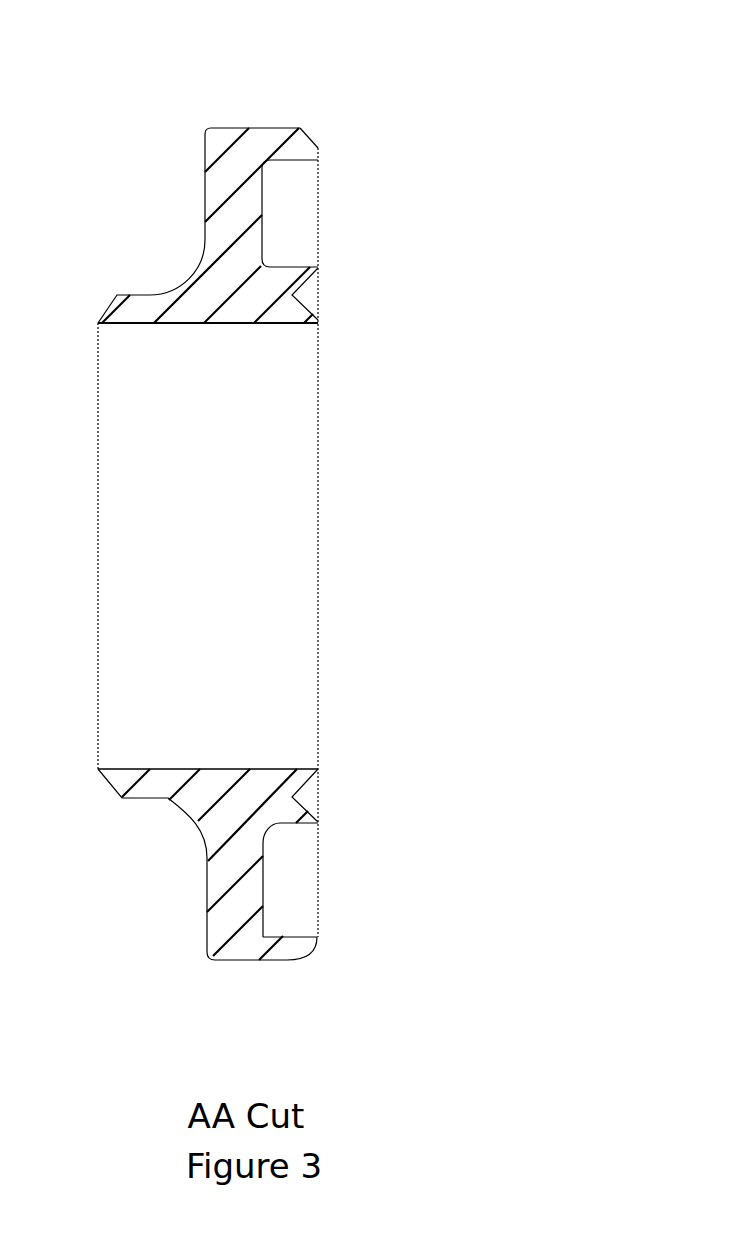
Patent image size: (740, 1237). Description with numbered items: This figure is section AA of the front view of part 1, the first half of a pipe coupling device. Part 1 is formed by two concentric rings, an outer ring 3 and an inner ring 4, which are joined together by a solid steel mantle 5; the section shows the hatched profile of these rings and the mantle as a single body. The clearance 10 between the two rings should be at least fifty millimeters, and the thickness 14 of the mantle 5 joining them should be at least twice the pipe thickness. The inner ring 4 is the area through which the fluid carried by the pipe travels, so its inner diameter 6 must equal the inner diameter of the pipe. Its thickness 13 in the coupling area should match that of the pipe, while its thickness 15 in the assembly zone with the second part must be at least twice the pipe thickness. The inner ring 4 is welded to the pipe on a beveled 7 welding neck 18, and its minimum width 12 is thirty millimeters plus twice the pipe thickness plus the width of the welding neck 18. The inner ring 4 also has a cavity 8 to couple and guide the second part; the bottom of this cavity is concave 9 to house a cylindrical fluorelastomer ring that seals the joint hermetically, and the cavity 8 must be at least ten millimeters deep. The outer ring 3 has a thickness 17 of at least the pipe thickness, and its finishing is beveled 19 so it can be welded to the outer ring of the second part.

The part 1 is at (470, 402).
The outer ring 3 is at (250, 113).
The inner ring 4 is at (179, 752).
The solid steel mantle 5 is at (192, 209).
The inner diameter 6 is at (245, 331).
The bevel 7 is at (90, 303).
The cavity 8 is at (328, 782).
The concave bottom 9 is at (309, 291).
The clearance 10 is at (296, 160).
The minimum width of the inner ring 12 is at (310, 433).
The thickness of the inner ring in the coupling area 13 is at (133, 806).
The thickness of the mantle 14 is at (199, 879).
The thickness in the assembly zone 15 is at (297, 761).
The thickness of the outer ring 17 is at (287, 929).
The welding neck 18 is at (200, 330).
The bevel 19 is at (314, 132).